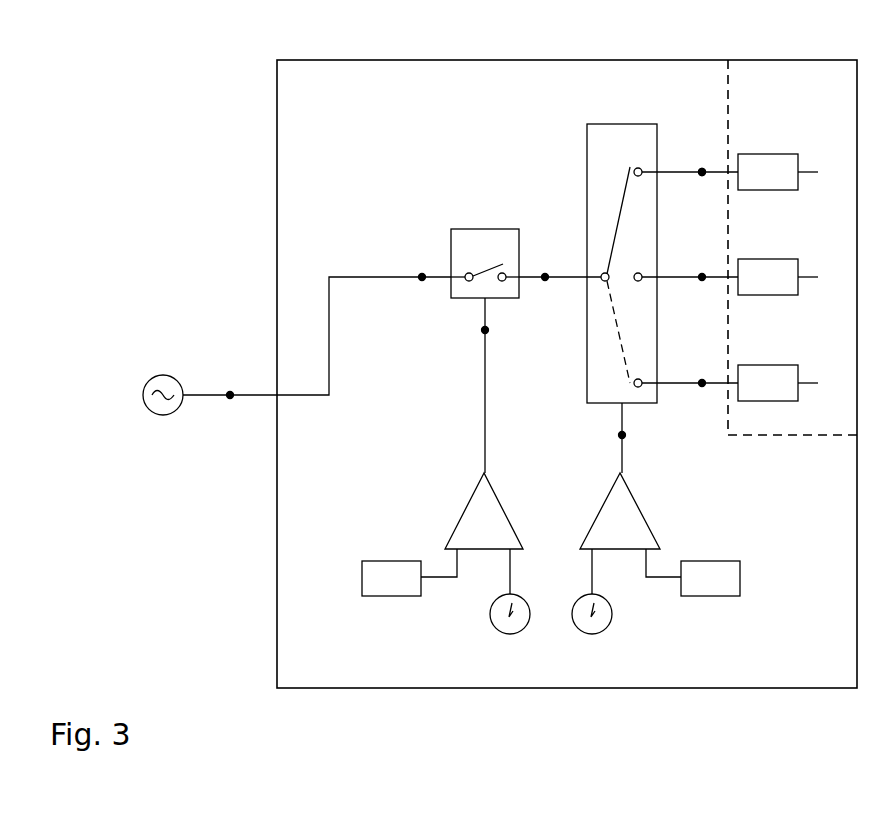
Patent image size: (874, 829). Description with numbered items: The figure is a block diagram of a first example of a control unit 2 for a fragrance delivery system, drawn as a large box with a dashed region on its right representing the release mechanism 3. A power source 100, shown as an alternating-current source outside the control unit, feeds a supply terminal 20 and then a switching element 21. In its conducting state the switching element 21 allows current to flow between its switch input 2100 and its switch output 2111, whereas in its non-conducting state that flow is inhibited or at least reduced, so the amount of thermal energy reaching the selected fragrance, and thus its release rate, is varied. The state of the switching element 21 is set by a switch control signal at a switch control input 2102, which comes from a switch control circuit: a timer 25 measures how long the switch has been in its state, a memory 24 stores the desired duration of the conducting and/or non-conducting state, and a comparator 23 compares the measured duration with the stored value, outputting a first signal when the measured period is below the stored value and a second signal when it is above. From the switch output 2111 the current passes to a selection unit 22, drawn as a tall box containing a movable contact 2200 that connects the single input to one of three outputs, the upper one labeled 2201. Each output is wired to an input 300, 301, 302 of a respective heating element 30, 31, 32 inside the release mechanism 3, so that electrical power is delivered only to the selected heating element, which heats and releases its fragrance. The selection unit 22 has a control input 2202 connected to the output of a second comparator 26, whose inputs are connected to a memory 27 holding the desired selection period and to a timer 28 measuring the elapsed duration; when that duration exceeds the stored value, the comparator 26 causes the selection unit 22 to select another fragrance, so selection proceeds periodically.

The control unit 2 is at (327, 95).
The release mechanism 3 is at (782, 95).
The power source 100 is at (163, 375).
The input terminal 20 is at (230, 391).
The switch input 2100 is at (422, 273).
The switching element 21 is at (485, 229).
The switch output 2111 is at (545, 273).
The switch control input 2102 is at (481, 330).
The selector switch common contact 2200 is at (576, 275).
The selection unit 22 is at (622, 124).
The first selector output 2201 is at (702, 168).
The input of heating element 300 is at (702, 176).
The input of heating element 301 is at (702, 281).
The input of heating element 302 is at (702, 387).
The heating element 30 is at (792, 172).
The heating element 31 is at (792, 277).
The heating element 32 is at (792, 383).
The control input 2202 is at (618, 435).
The comparator 23 is at (463, 498).
The comparator 26 is at (601, 498).
The memory 24 is at (390, 596).
The timer 25 is at (510, 634).
The memory 27 is at (708, 596).
The timer 28 is at (592, 634).